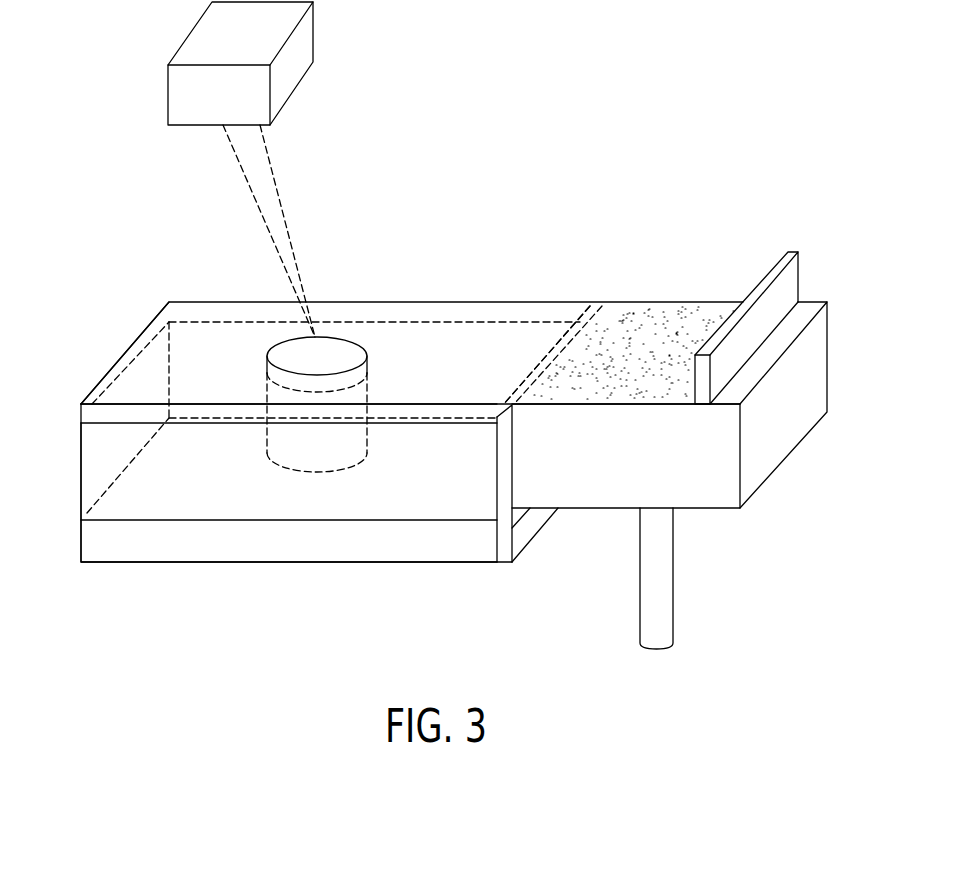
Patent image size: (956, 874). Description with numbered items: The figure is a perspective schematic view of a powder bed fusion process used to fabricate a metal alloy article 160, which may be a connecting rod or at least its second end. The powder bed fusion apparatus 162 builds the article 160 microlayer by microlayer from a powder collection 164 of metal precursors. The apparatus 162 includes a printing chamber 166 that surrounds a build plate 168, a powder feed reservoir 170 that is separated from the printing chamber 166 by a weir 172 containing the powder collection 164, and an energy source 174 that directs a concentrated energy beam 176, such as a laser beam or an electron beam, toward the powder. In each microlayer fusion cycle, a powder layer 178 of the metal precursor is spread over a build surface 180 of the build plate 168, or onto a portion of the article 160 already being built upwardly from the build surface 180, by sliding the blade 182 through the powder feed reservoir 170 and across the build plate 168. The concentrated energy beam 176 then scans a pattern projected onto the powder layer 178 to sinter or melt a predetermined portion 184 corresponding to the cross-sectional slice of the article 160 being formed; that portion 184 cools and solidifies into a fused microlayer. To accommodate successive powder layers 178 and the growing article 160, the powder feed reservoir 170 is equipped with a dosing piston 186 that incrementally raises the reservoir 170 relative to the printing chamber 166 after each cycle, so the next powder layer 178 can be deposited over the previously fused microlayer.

The metal alloy article 160 is at (431, 479).
The powder bed fusion apparatus 162 is at (570, 210).
The powder collection 164 is at (663, 375).
The printing chamber 166 is at (150, 322).
The build plate 168 is at (97, 550).
The powder feed reservoir 170 is at (812, 300).
The weir 172 is at (597, 307).
The energy source 174 is at (313, 62).
The concentrated energy beam 176 is at (288, 220).
The powder layer 178 is at (98, 416).
The build surface 180 is at (97, 513).
The blade 182 is at (793, 250).
The predetermined portion 184 is at (268, 358).
The dosing piston 186 is at (640, 575).